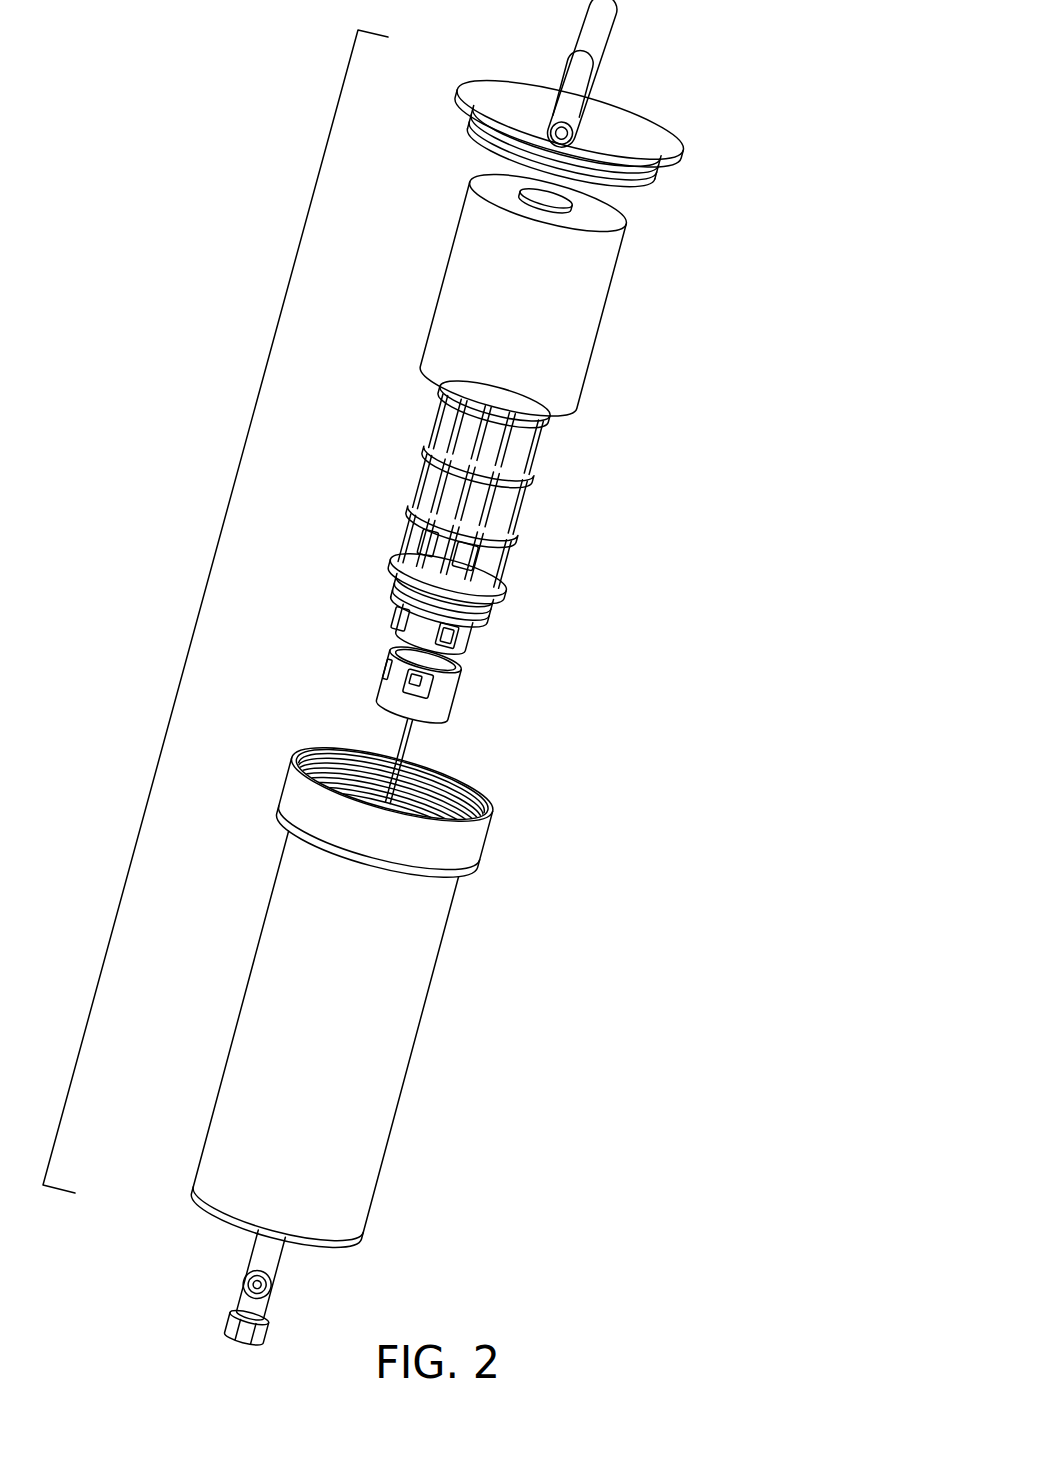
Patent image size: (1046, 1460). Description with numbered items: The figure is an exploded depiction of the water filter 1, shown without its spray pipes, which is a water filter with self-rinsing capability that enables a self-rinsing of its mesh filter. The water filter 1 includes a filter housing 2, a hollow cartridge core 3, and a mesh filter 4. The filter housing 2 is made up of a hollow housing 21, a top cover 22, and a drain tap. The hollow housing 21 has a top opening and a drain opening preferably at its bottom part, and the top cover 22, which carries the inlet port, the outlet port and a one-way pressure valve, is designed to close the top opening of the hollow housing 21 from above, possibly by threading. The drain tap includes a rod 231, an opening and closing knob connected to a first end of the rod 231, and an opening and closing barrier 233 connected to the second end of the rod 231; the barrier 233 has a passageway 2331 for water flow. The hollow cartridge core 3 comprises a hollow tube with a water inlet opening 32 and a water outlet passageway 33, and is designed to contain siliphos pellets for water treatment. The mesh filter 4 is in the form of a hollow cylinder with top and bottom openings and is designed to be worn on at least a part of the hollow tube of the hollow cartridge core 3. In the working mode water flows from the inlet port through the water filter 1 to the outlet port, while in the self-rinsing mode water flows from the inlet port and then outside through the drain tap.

The water filter 1 is at (797, 328).
The filter housing 2 is at (367, 1040).
The hollow housing 21 is at (375, 1098).
The top cover 22 is at (663, 138).
The rod 231 is at (387, 745).
The opening and closing barrier 233 is at (415, 694).
The passageway 2331 is at (385, 677).
The hollow cartridge core 3 is at (569, 295).
The water inlet opening 32 is at (555, 197).
The water outlet passageway 33 is at (402, 613).
The mesh filter 4 is at (518, 507).